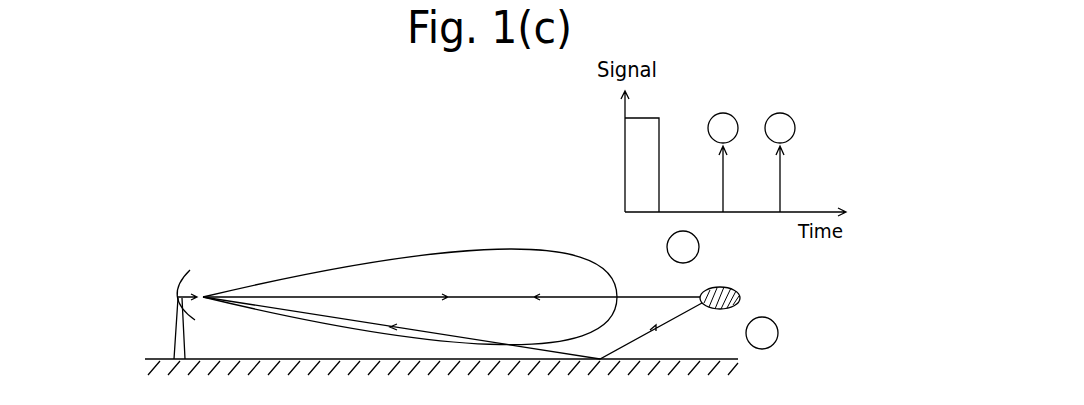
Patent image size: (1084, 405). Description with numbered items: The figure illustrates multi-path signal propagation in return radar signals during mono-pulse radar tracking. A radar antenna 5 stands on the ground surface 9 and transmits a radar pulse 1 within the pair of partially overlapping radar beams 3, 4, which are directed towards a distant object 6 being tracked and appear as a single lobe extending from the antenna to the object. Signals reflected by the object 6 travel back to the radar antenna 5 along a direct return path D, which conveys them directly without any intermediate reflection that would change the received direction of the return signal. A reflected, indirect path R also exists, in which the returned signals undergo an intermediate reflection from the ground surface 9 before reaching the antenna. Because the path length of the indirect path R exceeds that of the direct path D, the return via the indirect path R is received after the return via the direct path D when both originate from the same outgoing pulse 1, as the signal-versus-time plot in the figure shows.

The radar pulse 1 is at (650, 129).
The radar beam 3 is at (410, 269).
The radar beam 4 is at (493, 247).
The radar antenna 5 is at (178, 297).
The distant object 6 is at (728, 287).
The ground surface 9 is at (265, 359).
The direct return path D is at (670, 297).
The reflected, indirect path R is at (671, 315).